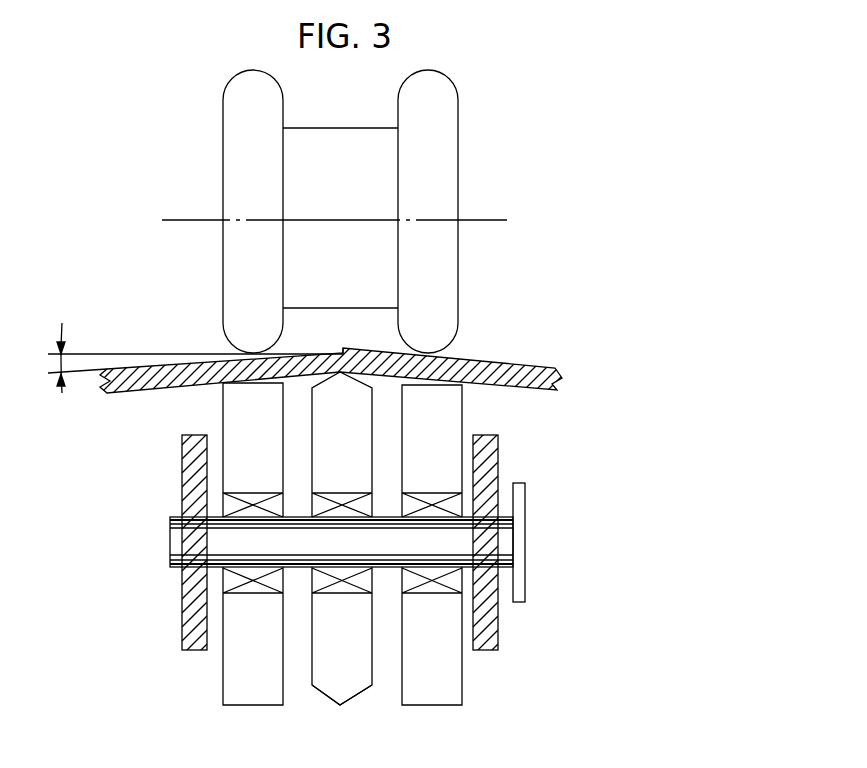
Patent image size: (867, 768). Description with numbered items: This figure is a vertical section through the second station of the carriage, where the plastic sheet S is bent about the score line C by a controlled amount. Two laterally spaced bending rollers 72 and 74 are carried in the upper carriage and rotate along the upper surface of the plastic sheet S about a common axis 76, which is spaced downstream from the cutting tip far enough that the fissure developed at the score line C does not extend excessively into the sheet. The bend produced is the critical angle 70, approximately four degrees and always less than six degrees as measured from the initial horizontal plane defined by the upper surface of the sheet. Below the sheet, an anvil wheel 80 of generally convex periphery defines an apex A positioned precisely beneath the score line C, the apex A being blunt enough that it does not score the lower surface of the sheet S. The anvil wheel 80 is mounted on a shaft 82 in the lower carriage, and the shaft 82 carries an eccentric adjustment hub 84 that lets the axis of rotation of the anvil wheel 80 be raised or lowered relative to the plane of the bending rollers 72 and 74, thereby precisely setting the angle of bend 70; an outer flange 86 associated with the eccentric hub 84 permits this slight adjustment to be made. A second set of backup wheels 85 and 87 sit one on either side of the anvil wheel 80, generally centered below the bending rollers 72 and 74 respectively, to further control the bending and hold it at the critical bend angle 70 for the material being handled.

The critical angle 70 is at (195, 344).
The bending roller 72 is at (458, 120).
The bending roller 74 is at (222, 113).
The axis 76 is at (495, 218).
The anvil wheel 80 is at (327, 698).
The shaft 82 is at (385, 568).
The eccentric adjustment hub 84 is at (333, 510).
The backup wheel 85 is at (462, 423).
The outer flange 86 is at (525, 497).
The backup wheel 87 is at (223, 408).
The apex A is at (341, 705).
The score line C is at (343, 350).
The plastic sheet S is at (537, 363).